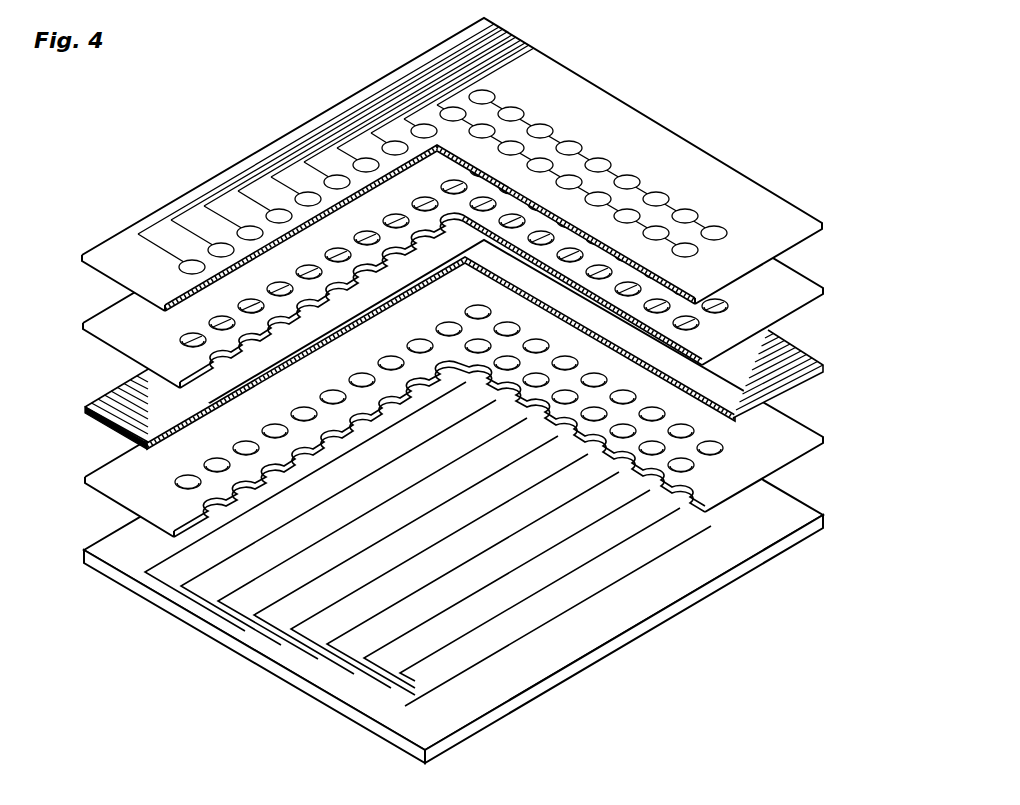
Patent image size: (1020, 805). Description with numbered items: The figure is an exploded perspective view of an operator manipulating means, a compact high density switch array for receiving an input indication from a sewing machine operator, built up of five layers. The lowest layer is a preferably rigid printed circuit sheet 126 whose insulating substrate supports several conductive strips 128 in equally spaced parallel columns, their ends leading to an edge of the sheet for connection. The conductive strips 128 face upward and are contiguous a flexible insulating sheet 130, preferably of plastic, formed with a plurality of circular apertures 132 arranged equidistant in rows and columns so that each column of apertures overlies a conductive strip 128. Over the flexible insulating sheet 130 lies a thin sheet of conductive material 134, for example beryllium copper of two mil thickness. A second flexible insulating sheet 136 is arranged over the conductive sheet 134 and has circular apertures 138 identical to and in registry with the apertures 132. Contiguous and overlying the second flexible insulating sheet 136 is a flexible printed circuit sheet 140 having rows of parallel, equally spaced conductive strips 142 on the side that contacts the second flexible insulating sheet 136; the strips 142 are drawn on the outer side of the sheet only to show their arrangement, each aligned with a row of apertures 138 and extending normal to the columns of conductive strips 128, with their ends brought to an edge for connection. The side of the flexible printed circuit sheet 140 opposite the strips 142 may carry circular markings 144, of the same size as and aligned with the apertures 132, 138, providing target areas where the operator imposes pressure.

The printed circuit sheet 126 is at (789, 520).
The conductive strips 128 is at (212, 598).
The flexible insulating sheet 130 is at (797, 432).
The circular apertures 132 is at (300, 412).
The sheet of conductive material 134 is at (803, 353).
The second flexible insulating sheet 136 is at (793, 283).
The circular apertures 138 is at (215, 328).
The flexible printed circuit sheet 140 is at (680, 137).
The conductive strips 142 is at (186, 212).
The circular markings 144 is at (212, 253).